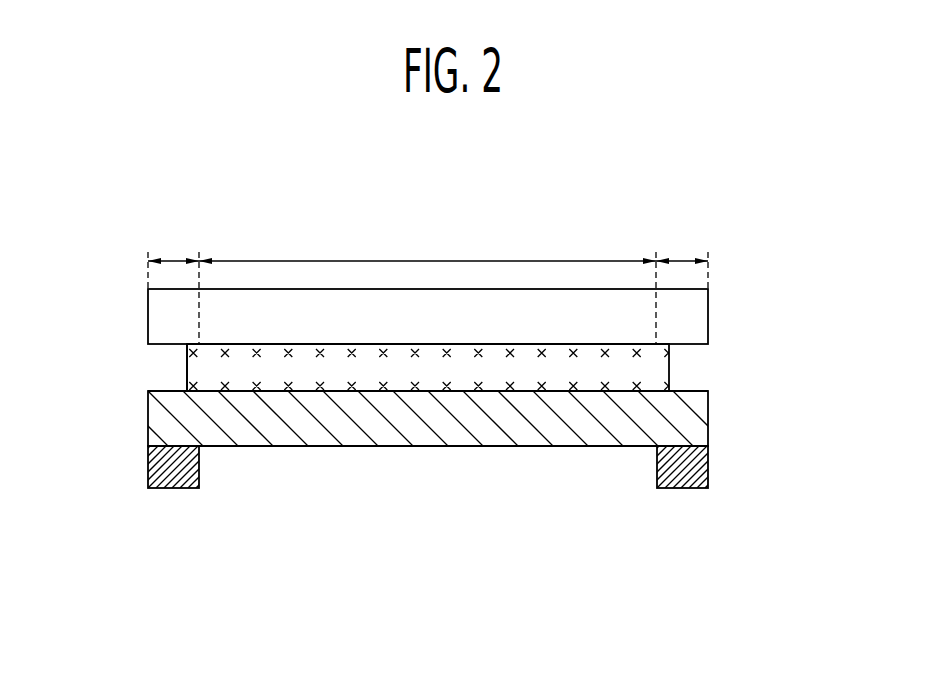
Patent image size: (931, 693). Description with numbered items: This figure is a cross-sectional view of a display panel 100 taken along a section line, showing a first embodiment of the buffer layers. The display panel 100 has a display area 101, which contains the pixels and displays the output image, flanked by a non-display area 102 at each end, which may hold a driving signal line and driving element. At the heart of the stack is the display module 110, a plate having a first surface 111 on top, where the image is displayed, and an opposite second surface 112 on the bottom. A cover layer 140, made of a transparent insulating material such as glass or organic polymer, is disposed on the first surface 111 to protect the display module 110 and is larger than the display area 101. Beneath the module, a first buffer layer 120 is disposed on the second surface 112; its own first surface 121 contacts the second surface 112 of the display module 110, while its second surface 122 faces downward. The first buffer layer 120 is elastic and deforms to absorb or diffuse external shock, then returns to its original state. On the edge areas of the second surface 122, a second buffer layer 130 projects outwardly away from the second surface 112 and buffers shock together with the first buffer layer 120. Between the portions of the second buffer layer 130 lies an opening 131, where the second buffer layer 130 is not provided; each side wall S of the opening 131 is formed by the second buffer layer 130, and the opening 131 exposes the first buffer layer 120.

The display panel 100 is at (671, 162).
The display area 101 is at (427, 286).
The non-display area 102 is at (428, 256).
The display module 110 is at (669, 360).
The first surface 111 is at (193, 344).
The second surface 112 is at (187, 383).
The first buffer layer 120 is at (702, 420).
The first surface 121 is at (692, 392).
The second surface 122 is at (635, 443).
The second buffer layer 130 is at (157, 472).
The opening 131 is at (409, 504).
The cover layer 140 is at (703, 317).
The side wall S is at (199, 466).